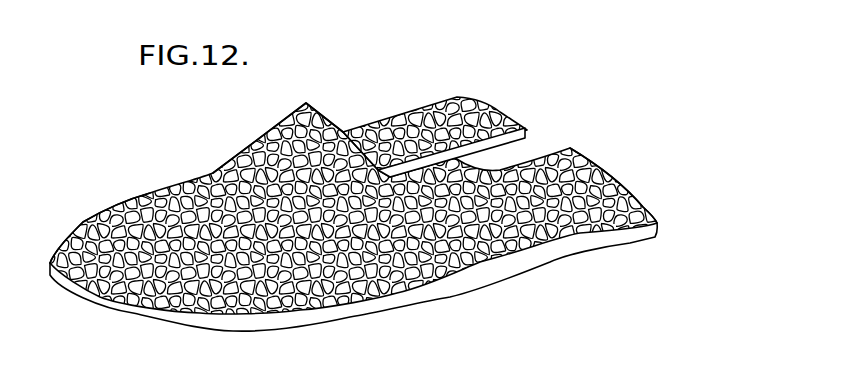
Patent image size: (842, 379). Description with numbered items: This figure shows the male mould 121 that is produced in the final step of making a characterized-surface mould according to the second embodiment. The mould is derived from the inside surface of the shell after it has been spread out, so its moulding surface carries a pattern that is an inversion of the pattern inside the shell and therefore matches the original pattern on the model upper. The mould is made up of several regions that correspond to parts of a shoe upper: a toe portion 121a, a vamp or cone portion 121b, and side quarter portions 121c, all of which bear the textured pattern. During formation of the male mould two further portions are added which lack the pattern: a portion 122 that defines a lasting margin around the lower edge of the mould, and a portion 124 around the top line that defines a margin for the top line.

The male mould 121 is at (143, 182).
The toe portion 121a is at (88, 216).
The vamp or cone portion 121b is at (259, 138).
The side quarter portions 121c is at (405, 113).
The portion defining a lasting margin 122 is at (352, 318).
The portion around the top line 124 is at (525, 132).